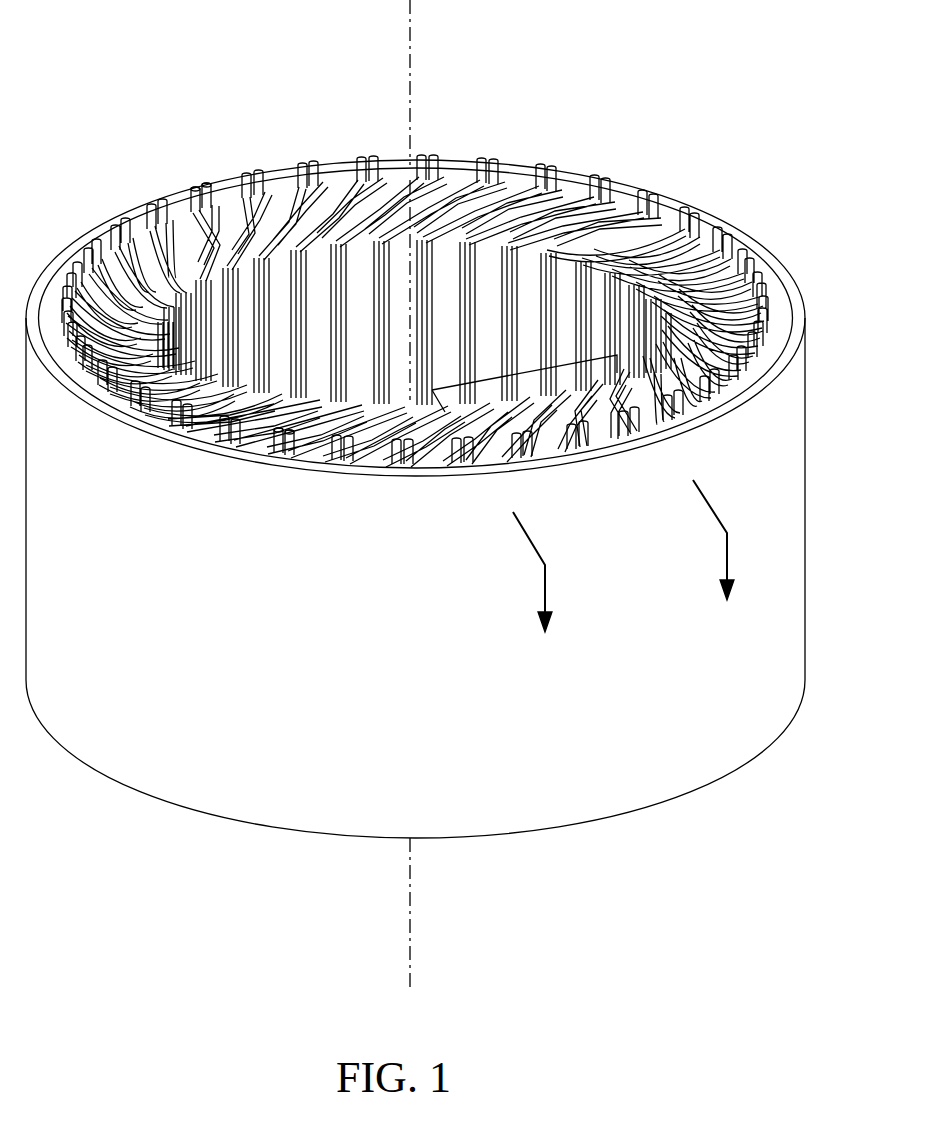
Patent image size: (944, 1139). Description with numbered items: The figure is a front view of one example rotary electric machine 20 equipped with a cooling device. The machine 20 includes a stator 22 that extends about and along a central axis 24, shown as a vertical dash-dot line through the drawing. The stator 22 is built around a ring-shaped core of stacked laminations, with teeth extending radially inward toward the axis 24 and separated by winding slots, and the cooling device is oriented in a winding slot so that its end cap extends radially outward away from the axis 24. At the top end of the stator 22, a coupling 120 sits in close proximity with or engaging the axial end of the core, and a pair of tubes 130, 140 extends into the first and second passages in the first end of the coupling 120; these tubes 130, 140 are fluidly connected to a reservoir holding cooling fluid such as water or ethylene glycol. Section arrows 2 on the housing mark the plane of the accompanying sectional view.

The rotary electric machine 20 is at (448, 494).
The stator 22 is at (793, 513).
The axis 24 is at (412, 40).
The coupling 120 is at (125, 408).
The tube 130 is at (197, 188).
The tube 140 is at (203, 178).
The section line 2- 2 is at (623, 572).